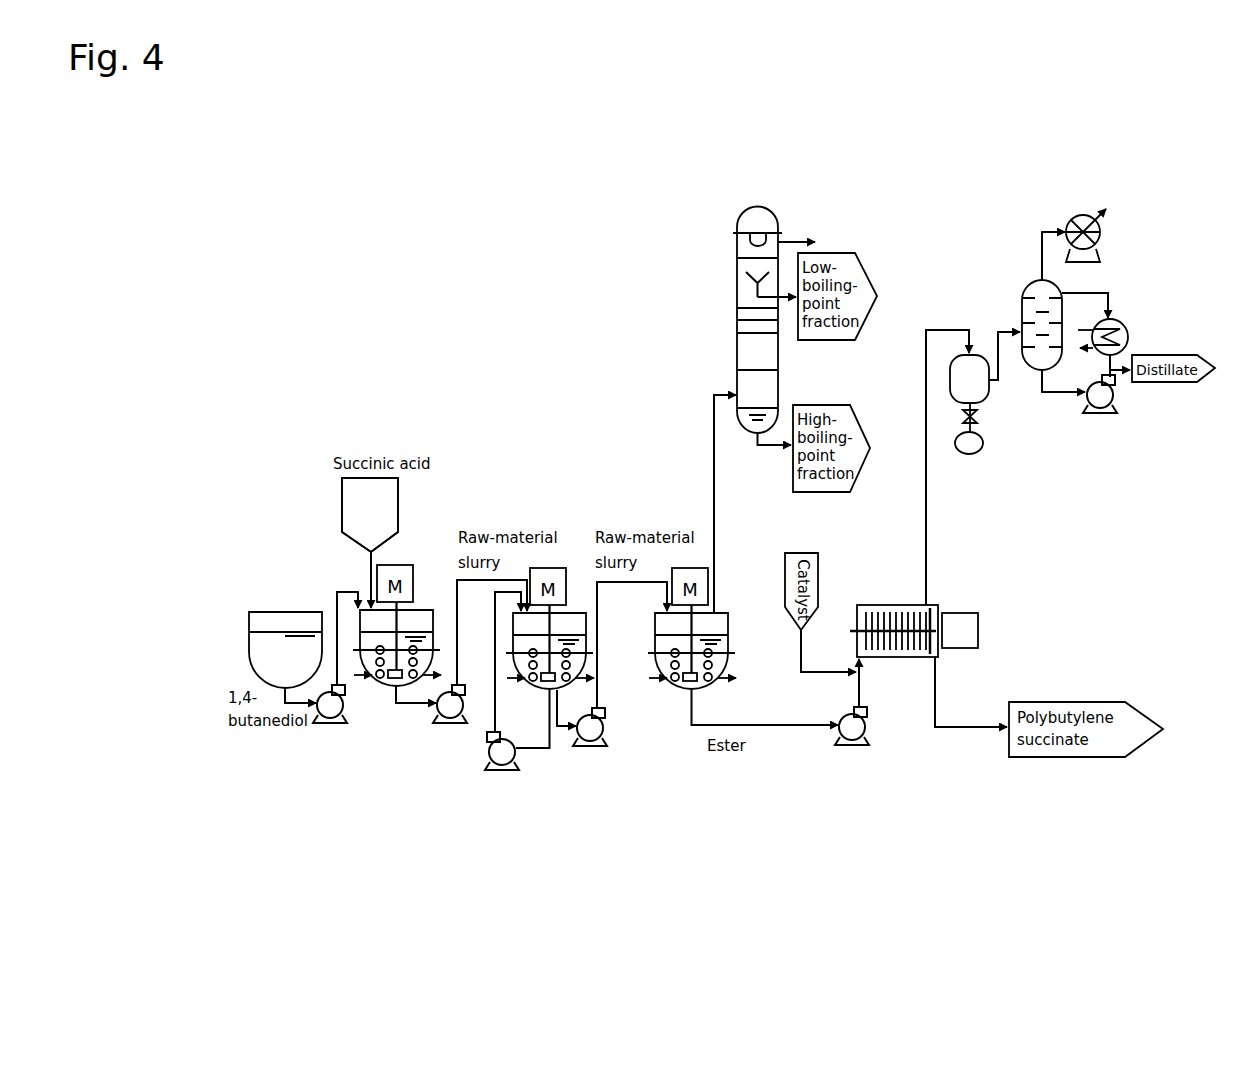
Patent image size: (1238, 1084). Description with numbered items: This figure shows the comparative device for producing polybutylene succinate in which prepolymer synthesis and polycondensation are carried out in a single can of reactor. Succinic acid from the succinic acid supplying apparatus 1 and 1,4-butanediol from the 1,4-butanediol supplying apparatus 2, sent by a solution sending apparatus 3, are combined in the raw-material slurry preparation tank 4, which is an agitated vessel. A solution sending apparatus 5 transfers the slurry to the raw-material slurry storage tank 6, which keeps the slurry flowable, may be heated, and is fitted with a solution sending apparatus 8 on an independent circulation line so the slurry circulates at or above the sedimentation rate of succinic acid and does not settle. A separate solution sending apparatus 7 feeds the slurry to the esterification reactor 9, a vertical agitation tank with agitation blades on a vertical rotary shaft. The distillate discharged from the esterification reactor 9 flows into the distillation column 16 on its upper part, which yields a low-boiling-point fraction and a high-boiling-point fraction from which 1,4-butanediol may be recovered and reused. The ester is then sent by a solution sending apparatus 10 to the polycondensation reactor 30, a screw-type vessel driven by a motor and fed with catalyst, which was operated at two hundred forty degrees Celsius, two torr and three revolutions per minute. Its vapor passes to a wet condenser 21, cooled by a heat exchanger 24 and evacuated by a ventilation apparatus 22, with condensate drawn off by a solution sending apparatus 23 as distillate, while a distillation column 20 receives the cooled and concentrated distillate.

The succinic acid supplying apparatus 1 is at (343, 510).
The 1,4-butanediol supplying apparatus 2 is at (293, 617).
The solution sending apparatus 3 is at (323, 731).
The raw-material slurry preparation tank 4 is at (384, 684).
The solution sending apparatus 5 is at (447, 731).
The raw-material slurry storage tank 6 is at (533, 684).
The solution sending apparatus 7 is at (585, 747).
The solution sending apparatus 8 is at (493, 772).
The esterification reactor 9 is at (683, 691).
The solution sending apparatus 10 is at (848, 749).
The distillation column 16 is at (737, 341).
The distillation column 20 is at (981, 404).
The wet condenser 21 is at (1020, 319).
The ventilation apparatus 22 is at (1088, 223).
The solution sending apparatus 23 is at (1095, 417).
The heat exchanger 24 is at (1119, 321).
The polycondensation reactor 30 is at (880, 659).